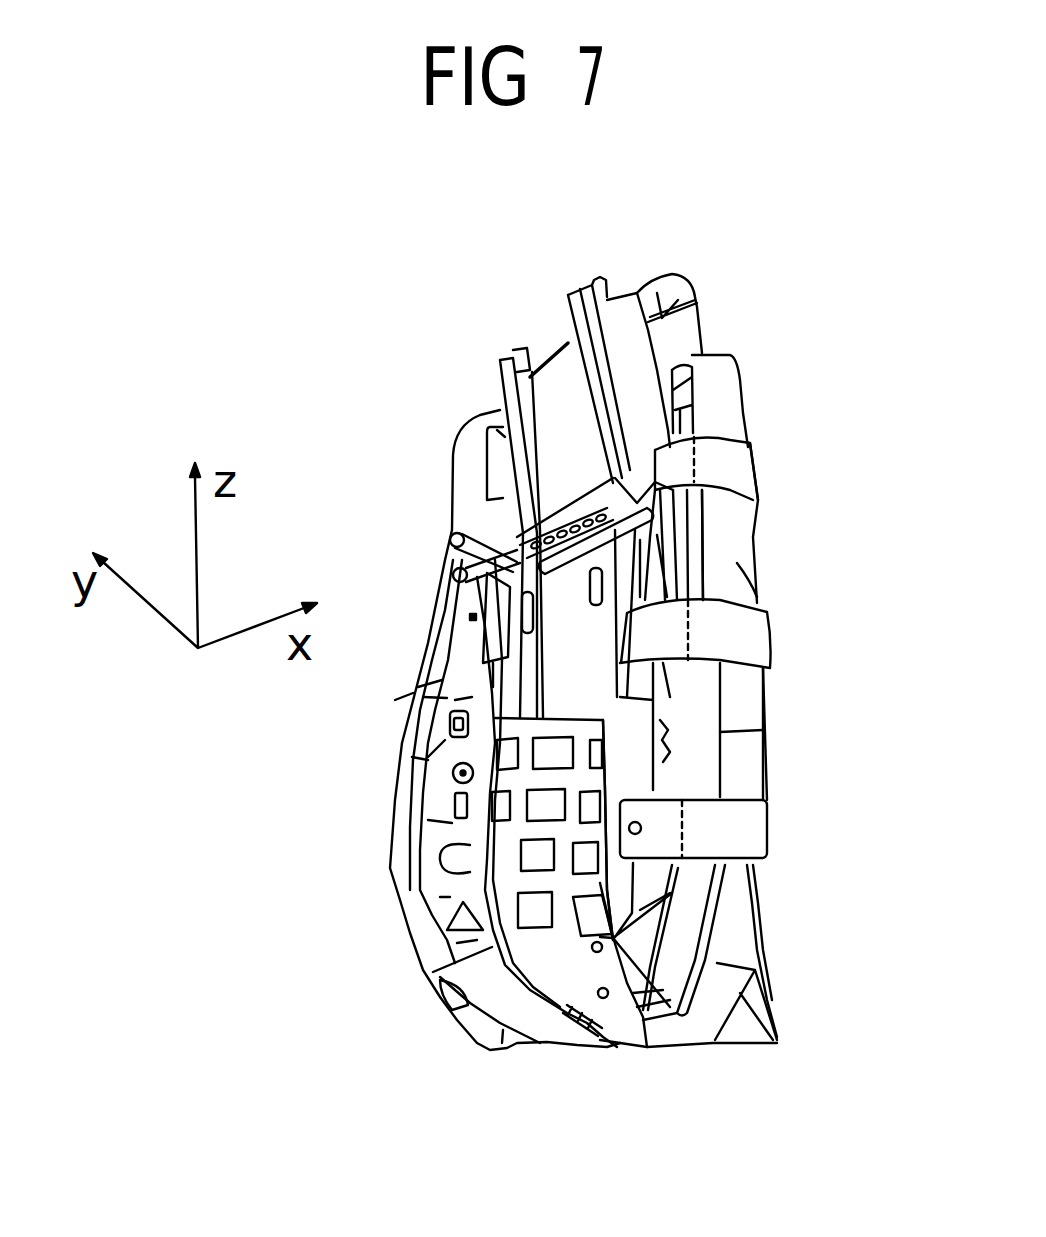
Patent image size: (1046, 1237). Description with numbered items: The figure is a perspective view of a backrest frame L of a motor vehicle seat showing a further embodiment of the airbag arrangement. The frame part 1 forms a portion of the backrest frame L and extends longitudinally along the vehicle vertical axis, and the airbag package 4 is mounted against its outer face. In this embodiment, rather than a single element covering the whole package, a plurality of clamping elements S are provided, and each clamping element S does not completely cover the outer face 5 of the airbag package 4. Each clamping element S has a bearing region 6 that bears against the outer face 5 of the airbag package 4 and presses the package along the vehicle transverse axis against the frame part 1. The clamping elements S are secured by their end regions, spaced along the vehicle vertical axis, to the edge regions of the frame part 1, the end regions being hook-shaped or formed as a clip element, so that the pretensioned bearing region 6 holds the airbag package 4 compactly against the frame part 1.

The frame part 1 is at (633, 738).
The airbag package 4 is at (763, 730).
The outer face of the airbag package 5 is at (710, 547).
The bearing region 6 is at (727, 840).
The clamping element S is at (772, 827).
The backrest frame L is at (390, 868).